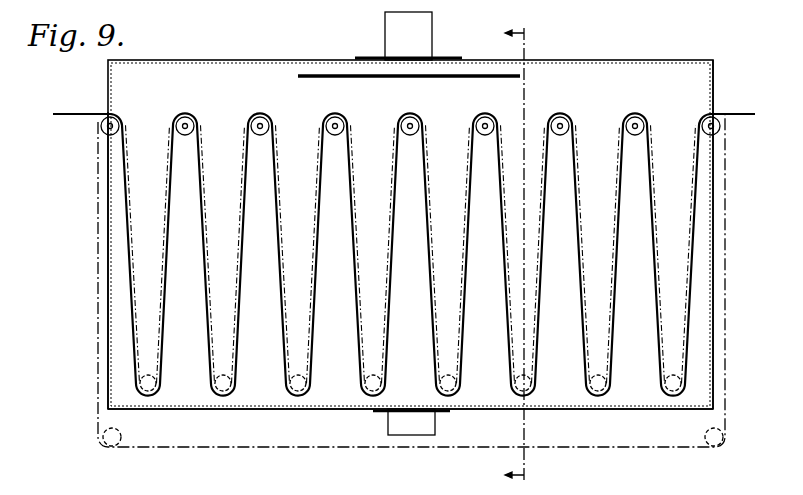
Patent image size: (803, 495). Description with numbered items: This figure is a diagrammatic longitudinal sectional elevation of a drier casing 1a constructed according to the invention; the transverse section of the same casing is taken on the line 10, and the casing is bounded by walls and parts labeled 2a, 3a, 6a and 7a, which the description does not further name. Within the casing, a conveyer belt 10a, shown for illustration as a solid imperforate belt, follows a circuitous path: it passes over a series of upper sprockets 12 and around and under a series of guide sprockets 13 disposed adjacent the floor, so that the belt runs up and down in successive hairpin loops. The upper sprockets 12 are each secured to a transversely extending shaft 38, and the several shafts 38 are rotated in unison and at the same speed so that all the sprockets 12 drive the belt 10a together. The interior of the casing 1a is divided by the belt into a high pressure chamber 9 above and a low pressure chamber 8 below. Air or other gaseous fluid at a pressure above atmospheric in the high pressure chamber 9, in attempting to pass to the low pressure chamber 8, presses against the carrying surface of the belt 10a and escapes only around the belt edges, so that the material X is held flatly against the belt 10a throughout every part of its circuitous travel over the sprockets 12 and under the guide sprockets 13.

The casing 1a is at (209, 60).
The casing left side wall 2a is at (110, 279).
The casing right side wall 3a is at (725, 313).
The inlet pipe connection 6a is at (302, 50).
The casing bottom wall with outlet pipe 7a is at (479, 410).
The low pressure chamber 8 is at (333, 392).
The high pressure chamber 9 is at (409, 93).
The line 10- 10 is at (525, 252).
The belt 10a is at (163, 317).
The upper sprockets 12 is at (322, 130).
The guide sprockets 13 is at (212, 381).
The shafts 38 is at (253, 119).
The material X is at (76, 104).